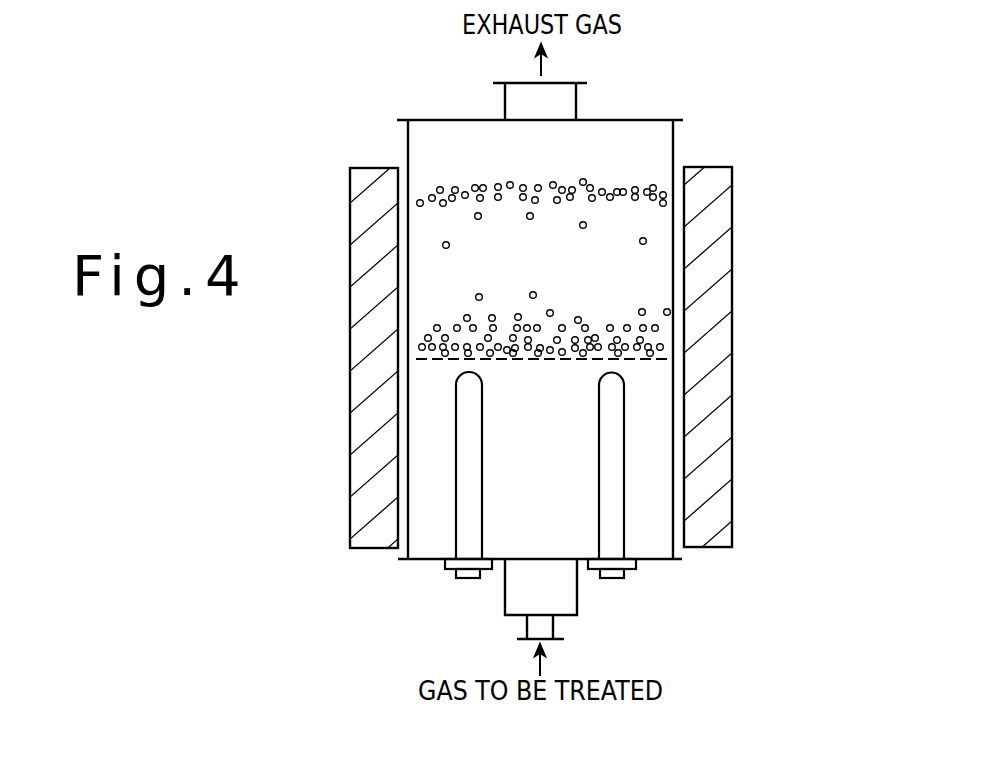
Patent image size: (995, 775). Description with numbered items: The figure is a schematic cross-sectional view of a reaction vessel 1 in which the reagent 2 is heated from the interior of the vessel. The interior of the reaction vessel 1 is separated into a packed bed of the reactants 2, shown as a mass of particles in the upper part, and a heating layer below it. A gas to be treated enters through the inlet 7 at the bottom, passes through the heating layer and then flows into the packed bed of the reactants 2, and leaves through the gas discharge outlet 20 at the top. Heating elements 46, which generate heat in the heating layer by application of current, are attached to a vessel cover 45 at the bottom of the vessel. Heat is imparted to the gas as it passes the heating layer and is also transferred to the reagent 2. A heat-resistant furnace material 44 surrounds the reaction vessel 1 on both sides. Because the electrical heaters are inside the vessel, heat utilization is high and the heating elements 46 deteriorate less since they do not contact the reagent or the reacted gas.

The reaction vessel 1 is at (638, 133).
The reagent 2 is at (527, 190).
The inlet for a gas to be treated 7 is at (547, 642).
The gas discharge outlet 20 is at (557, 83).
The heat-resistant furnace material 44 is at (360, 338).
The vessel cover 45 is at (664, 561).
The heating elements 46 is at (482, 492).